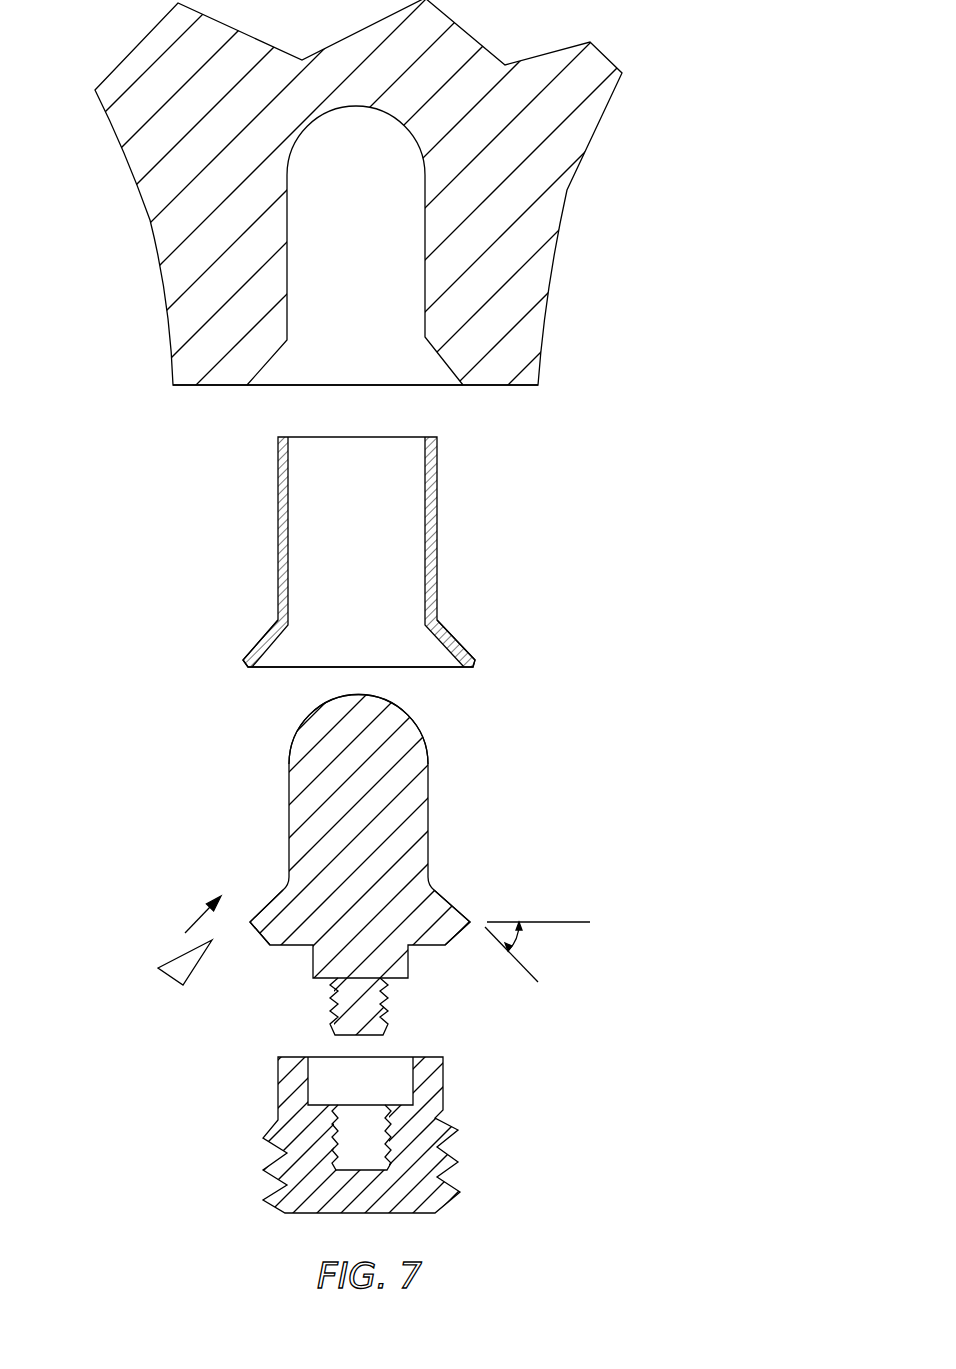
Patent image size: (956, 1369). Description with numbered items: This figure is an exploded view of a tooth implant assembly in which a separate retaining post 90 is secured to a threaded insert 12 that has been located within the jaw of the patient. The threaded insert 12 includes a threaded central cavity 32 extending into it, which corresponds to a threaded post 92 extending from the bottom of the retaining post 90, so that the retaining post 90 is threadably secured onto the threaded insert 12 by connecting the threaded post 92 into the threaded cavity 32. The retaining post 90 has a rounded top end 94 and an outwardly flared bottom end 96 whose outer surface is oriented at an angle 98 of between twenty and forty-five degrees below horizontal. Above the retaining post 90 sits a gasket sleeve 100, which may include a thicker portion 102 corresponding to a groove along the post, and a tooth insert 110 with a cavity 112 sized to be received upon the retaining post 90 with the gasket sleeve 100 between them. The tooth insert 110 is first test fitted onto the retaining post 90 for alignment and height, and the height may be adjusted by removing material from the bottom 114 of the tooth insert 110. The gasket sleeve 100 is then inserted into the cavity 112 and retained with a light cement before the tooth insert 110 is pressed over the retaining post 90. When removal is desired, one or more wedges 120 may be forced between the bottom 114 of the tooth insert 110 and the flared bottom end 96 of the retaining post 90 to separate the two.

The threaded insert 12 is at (443, 1090).
The threaded central cavity 32 is at (343, 1088).
The retaining post 90 is at (428, 787).
The threaded post 92 is at (387, 1005).
The rounded top end 94 is at (413, 720).
The outwardly flared bottom end 96 is at (452, 905).
The angle 98 is at (518, 938).
The gasket sleeve 100 is at (437, 535).
The thicker portion 102 is at (457, 643).
The tooth insert 110 is at (451, 226).
The cavity 112 is at (312, 248).
The bottom 114 is at (500, 385).
The wedge 120 is at (181, 960).